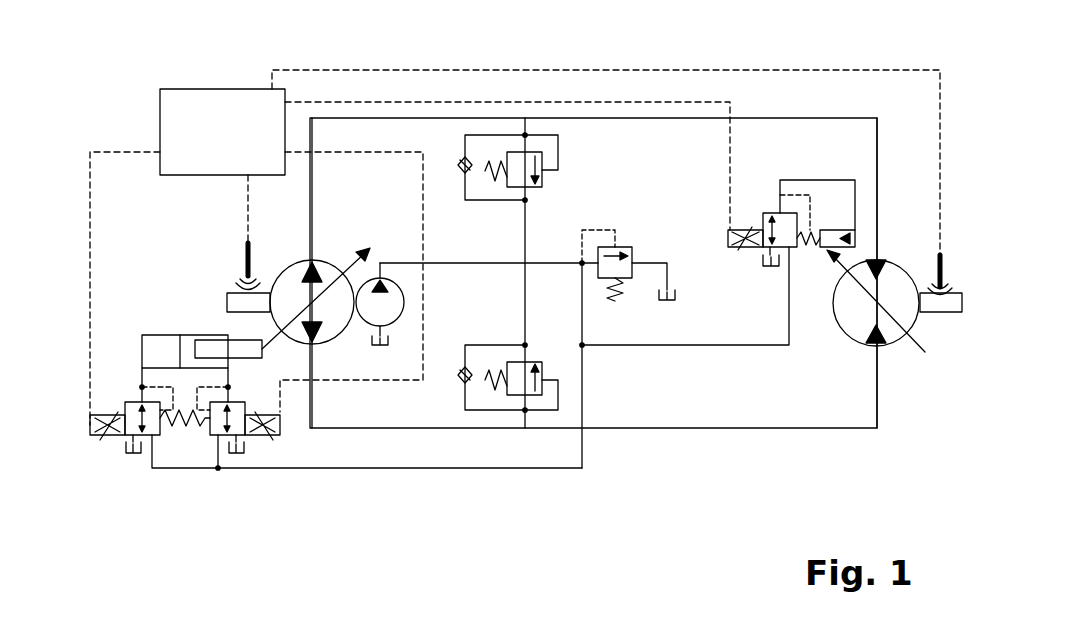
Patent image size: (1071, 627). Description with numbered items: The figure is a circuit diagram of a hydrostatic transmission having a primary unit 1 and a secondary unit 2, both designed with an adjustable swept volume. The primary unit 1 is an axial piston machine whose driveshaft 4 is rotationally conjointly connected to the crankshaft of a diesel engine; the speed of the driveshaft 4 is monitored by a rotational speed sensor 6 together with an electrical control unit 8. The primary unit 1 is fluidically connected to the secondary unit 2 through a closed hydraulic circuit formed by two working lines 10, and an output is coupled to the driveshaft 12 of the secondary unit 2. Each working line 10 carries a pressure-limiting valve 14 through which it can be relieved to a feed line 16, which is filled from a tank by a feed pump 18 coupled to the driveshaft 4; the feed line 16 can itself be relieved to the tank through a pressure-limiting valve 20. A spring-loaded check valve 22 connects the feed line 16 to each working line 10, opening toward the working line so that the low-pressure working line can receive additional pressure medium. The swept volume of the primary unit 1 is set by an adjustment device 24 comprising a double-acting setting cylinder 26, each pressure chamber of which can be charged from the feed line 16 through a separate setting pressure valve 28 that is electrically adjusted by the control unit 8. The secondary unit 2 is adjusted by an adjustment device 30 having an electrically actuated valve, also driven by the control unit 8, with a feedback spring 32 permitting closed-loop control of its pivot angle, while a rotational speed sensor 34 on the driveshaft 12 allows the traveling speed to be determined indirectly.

The primary unit 1 is at (283, 272).
The secondary unit 2 is at (857, 345).
The driveshaft 4 is at (228, 302).
The rotational speed sensor 6 is at (243, 265).
The electrical control unit 8 is at (515, 247).
The working lines 10 is at (778, 117).
The driveshaft 12 is at (937, 313).
The pressure-limiting valve 14 is at (561, 172).
The feed line 16 is at (476, 254).
The feed pump 18 is at (400, 300).
The pressure-limiting valve 20 is at (642, 242).
The spring-loaded check valve 22 is at (461, 159).
The adjustment device 24 is at (197, 334).
The double-acting setting cylinder 26 is at (162, 335).
The setting pressure valve 28 is at (137, 463).
The adjustment device 30 is at (832, 144).
The feedback spring 32 is at (812, 228).
The rotational speed sensor 34 is at (930, 272).